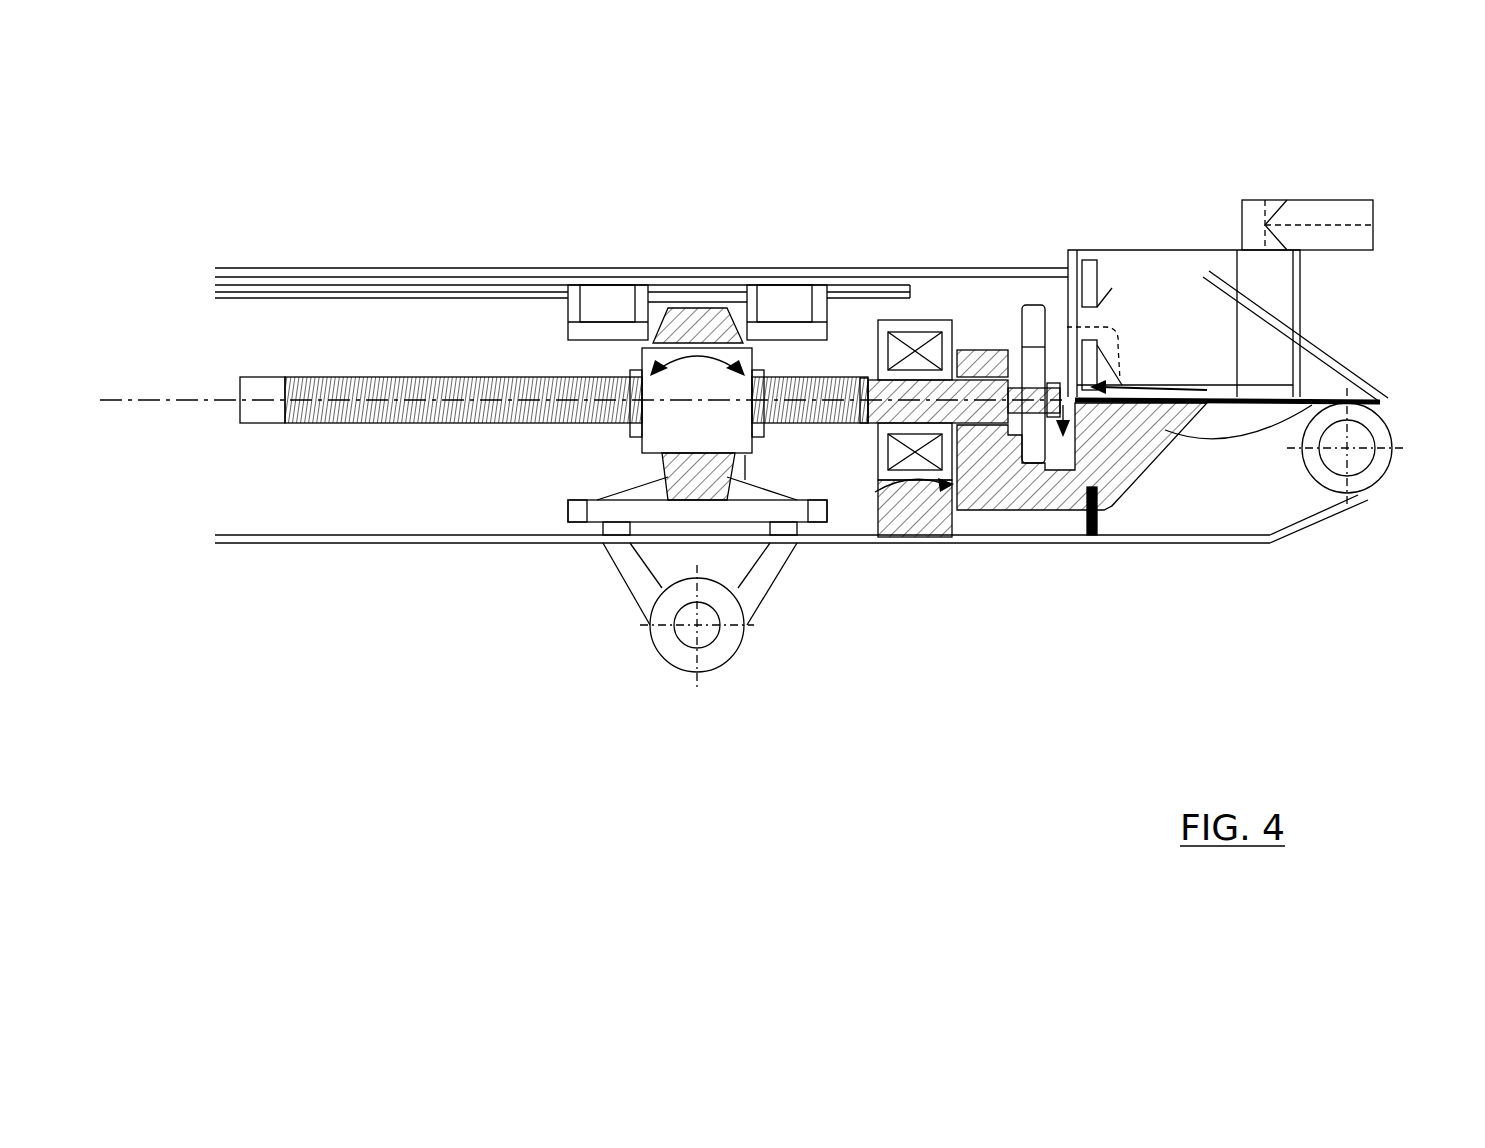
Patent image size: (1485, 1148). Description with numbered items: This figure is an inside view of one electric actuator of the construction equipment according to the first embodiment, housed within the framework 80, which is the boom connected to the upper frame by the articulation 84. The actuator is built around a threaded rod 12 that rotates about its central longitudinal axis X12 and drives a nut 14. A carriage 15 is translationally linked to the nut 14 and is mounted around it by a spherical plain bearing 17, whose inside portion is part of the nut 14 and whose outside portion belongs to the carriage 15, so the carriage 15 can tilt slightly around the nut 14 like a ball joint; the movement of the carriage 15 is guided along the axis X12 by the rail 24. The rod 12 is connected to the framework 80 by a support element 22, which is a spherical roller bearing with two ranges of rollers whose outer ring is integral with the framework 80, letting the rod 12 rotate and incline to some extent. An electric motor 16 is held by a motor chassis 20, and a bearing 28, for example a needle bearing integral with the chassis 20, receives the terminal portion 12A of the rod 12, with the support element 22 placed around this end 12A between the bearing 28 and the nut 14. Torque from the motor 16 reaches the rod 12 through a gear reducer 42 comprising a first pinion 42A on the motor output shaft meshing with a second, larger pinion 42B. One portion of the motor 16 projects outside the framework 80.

The longitudinal axis X12 is at (581, 361).
The threaded rod 12 is at (385, 425).
The terminal portion 12A is at (1130, 502).
The nut 14 is at (697, 401).
The carriage 15 is at (642, 485).
The electric motor 16 is at (1137, 325).
The spherical plain bearing 17 is at (612, 357).
The motor chassis 20 is at (1223, 497).
The support element 22 is at (944, 296).
The rail 24 is at (292, 277).
The bearing 28 is at (993, 310).
The gear reducer 42 is at (1058, 470).
The first pinion 42A is at (1127, 392).
The second pinion 42B is at (1372, 388).
The framework 80 is at (1020, 536).
The articulation 84 is at (1387, 483).